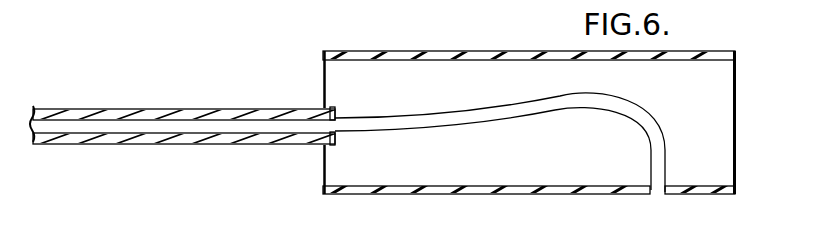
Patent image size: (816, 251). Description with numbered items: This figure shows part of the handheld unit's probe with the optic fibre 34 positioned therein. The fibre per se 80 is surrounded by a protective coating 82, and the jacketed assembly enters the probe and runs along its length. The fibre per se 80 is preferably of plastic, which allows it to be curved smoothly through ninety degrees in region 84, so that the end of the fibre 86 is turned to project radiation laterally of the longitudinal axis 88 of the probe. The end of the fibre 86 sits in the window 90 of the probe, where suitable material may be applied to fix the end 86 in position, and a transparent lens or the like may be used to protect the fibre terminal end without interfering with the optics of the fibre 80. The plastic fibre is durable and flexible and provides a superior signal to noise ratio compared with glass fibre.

The optic fibre 34 is at (307, 105).
The fibre per se 80 is at (448, 112).
The protective coating 82 is at (201, 109).
The curved region 84 is at (598, 109).
The end of the fibre 86 is at (660, 191).
The longitudinal axis 88 is at (693, 117).
The window 90 is at (610, 195).